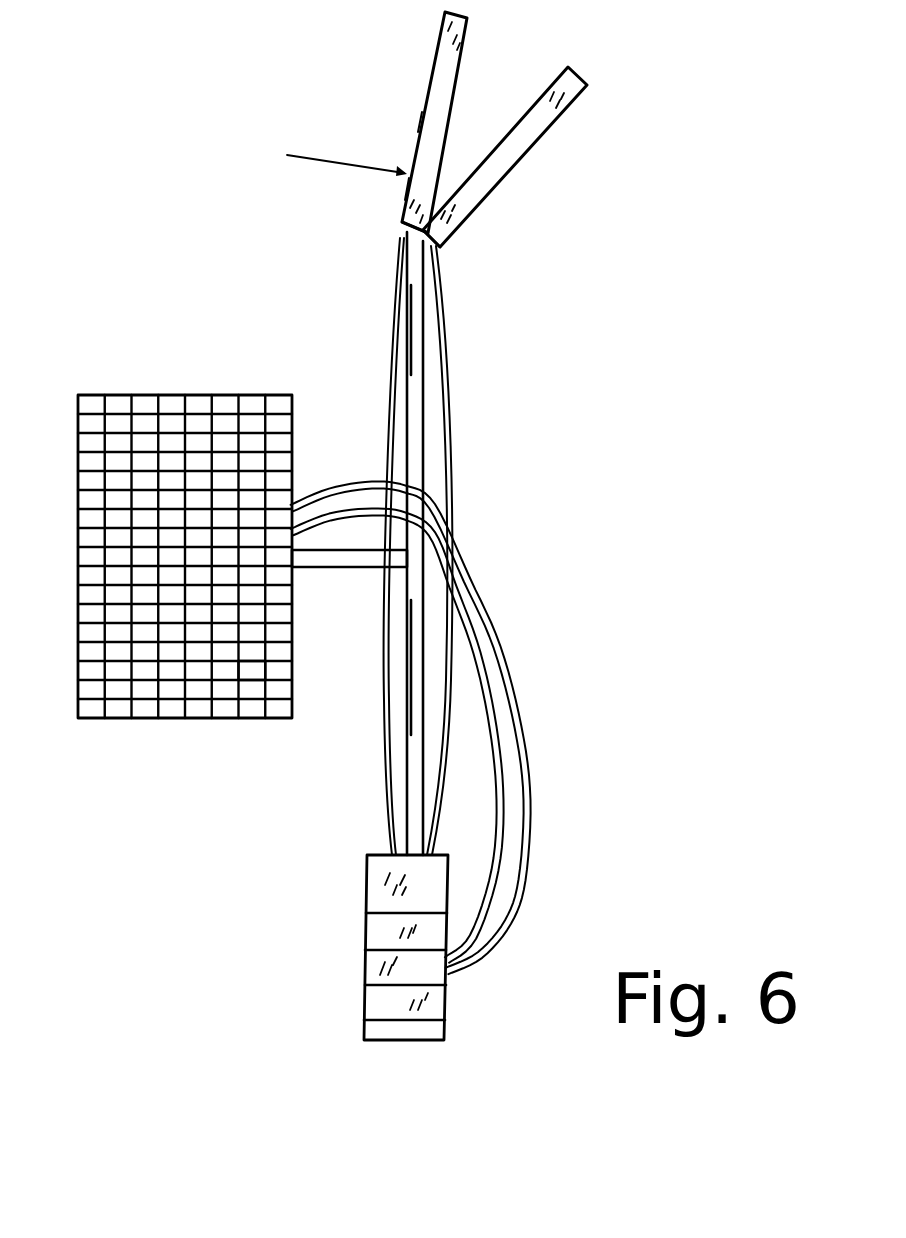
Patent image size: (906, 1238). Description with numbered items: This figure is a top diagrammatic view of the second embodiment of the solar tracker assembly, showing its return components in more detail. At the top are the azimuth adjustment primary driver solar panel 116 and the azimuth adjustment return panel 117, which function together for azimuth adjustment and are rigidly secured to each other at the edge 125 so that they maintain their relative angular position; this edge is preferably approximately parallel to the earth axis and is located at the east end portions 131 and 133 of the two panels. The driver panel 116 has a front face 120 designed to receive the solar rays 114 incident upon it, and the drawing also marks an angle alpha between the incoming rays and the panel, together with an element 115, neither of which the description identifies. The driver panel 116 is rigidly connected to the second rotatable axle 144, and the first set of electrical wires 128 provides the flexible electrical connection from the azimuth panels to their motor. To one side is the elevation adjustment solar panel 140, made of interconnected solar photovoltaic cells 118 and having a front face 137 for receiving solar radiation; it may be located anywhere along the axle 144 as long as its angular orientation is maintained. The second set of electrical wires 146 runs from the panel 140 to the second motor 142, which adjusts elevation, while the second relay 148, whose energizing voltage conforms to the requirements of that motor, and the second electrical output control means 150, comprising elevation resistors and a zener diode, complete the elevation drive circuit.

The solar rays 114 is at (303, 162).
The support bar 115 is at (352, 568).
The azimuth adjustment primary driver solar panel 116 is at (431, 52).
The azimuth adjustment return panel 117 is at (548, 138).
The solar photovoltaic cells 118 is at (245, 673).
The front side or face 120 is at (422, 112).
The edge 125 is at (402, 230).
The first set of electrical wires 128 is at (395, 347).
The east end portion 131 is at (407, 195).
The east end portion 133 is at (440, 238).
The front side or face 137 is at (115, 558).
The elevation adjustment solar panel 140 is at (157, 581).
The second motor 142 is at (404, 947).
The second rotatable shaft or axle 144 is at (403, 782).
The second set of electrical wires 146 is at (490, 605).
The second relay 148 is at (440, 1012).
The second electrical output control means 150 is at (363, 975).
The angle between rods alpha is at (413, 138).